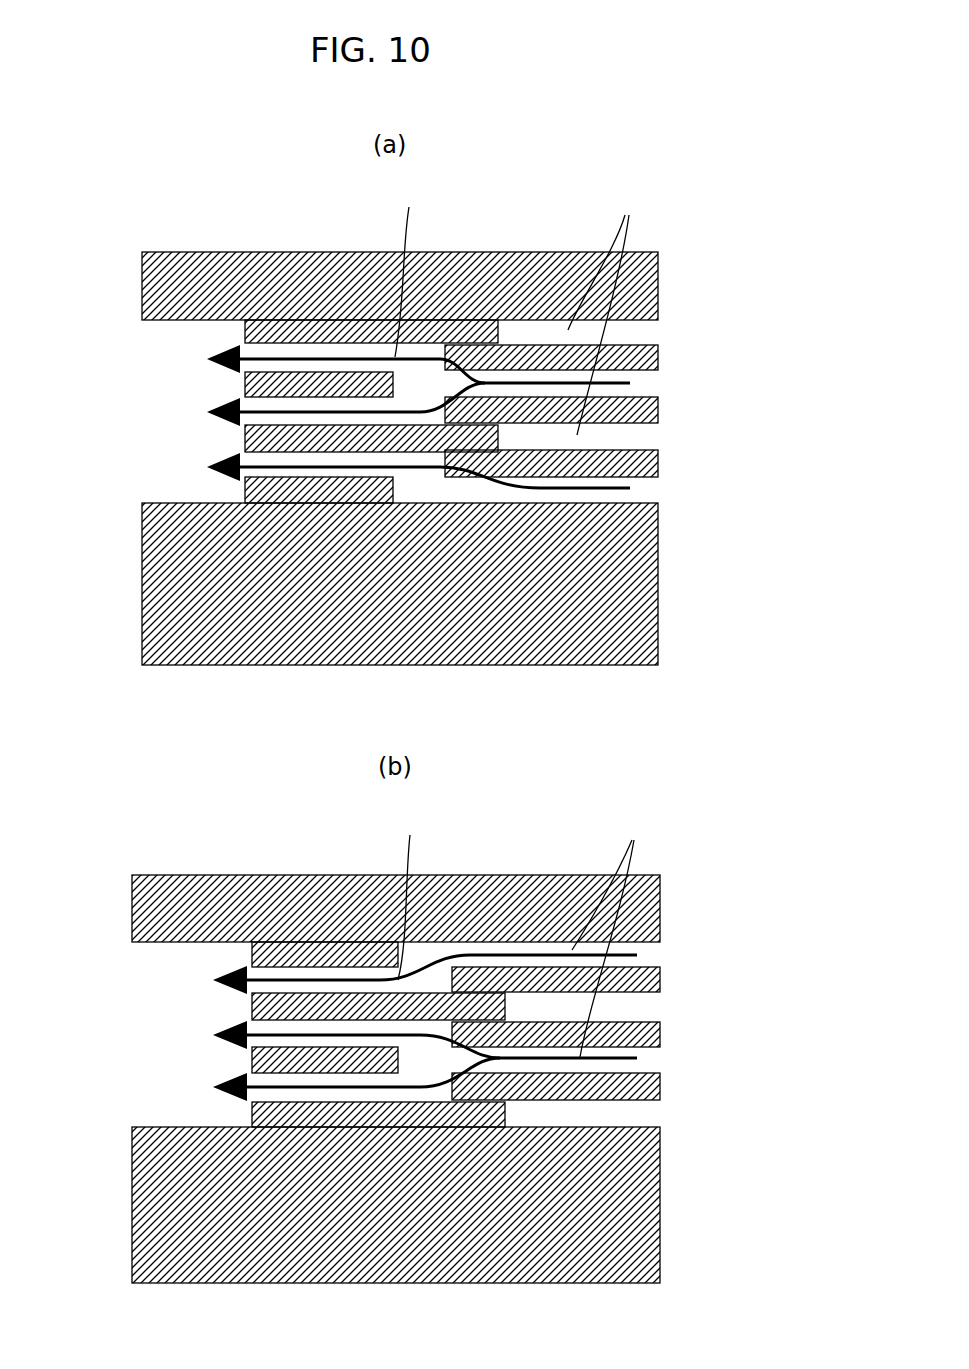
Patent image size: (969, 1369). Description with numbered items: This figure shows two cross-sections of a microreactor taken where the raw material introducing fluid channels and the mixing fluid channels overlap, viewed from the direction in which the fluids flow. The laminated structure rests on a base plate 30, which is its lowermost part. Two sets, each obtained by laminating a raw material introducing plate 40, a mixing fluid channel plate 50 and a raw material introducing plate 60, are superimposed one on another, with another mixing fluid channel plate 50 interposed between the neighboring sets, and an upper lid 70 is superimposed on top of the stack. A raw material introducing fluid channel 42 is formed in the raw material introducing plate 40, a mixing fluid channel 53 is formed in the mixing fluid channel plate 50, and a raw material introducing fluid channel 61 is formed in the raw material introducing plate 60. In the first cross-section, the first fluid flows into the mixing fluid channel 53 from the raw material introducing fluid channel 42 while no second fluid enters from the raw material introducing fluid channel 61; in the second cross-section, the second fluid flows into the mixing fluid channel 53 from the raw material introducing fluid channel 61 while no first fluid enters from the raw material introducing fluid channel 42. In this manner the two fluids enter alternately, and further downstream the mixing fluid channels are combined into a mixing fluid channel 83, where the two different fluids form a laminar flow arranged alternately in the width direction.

The base plate 30 is at (165, 572).
The raw material introducing plate 40 is at (245, 385).
The raw material introducing fluid channel 42 is at (643, 386).
The mixing fluid channel plate 50 is at (655, 353).
The mixing fluid channel 53 is at (410, 579).
The raw material introducing plate 60 is at (245, 329).
The raw material introducing fluid channel 61 is at (607, 622).
The upper lid 70 is at (165, 262).
The mixing fluid channel 83 is at (195, 360).